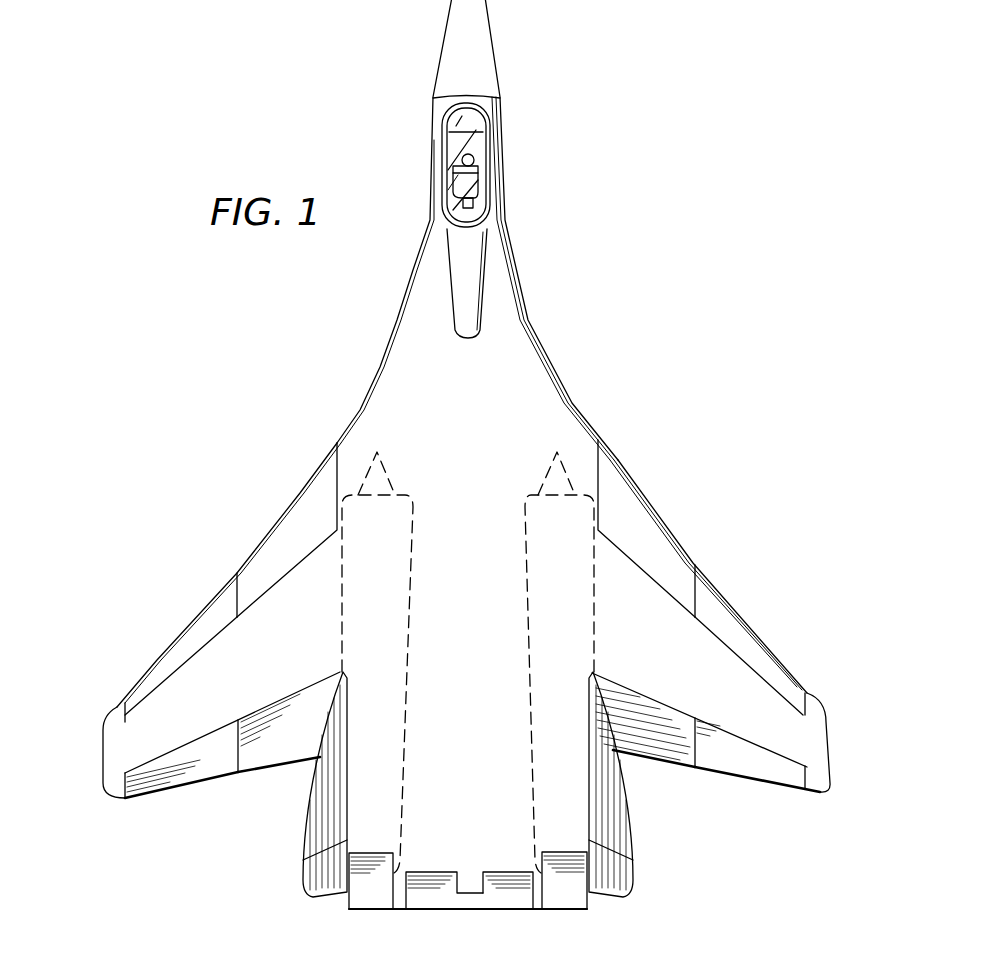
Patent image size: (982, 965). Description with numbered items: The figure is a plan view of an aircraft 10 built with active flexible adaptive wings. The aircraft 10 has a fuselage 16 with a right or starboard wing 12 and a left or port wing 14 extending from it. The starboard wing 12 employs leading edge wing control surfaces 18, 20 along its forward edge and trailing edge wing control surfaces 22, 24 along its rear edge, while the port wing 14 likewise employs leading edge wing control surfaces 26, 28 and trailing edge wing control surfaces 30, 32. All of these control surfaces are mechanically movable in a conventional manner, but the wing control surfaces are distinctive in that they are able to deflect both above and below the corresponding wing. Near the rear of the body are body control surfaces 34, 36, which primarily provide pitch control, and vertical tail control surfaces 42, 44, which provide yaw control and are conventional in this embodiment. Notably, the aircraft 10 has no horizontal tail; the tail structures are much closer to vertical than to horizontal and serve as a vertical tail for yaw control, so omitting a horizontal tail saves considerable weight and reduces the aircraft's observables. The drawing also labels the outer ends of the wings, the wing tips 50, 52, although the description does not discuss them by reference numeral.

The aircraft 10 is at (556, 310).
The wing 12 is at (723, 677).
The wing 14 is at (262, 620).
The fuselage 16 is at (496, 162).
The leading edge wing control surface 18 is at (722, 603).
The leading edge wing control surface 20 is at (628, 512).
The trailing edge wing control surface 22 is at (738, 760).
The trailing edge wing control surface 24 is at (662, 737).
The leading edge wing control surface 26 is at (182, 652).
The leading edge wing control surface 28 is at (310, 500).
The trailing edge wing control surface 30 is at (180, 775).
The trailing edge wing control surface 32 is at (298, 747).
The body control surface 34 is at (508, 898).
The body control surface 36 is at (442, 898).
The vertical tail control surface 42 is at (611, 864).
The vertical tail control surface 44 is at (328, 876).
The right wing tip 50 is at (820, 726).
The left wing tip 52 is at (113, 752).